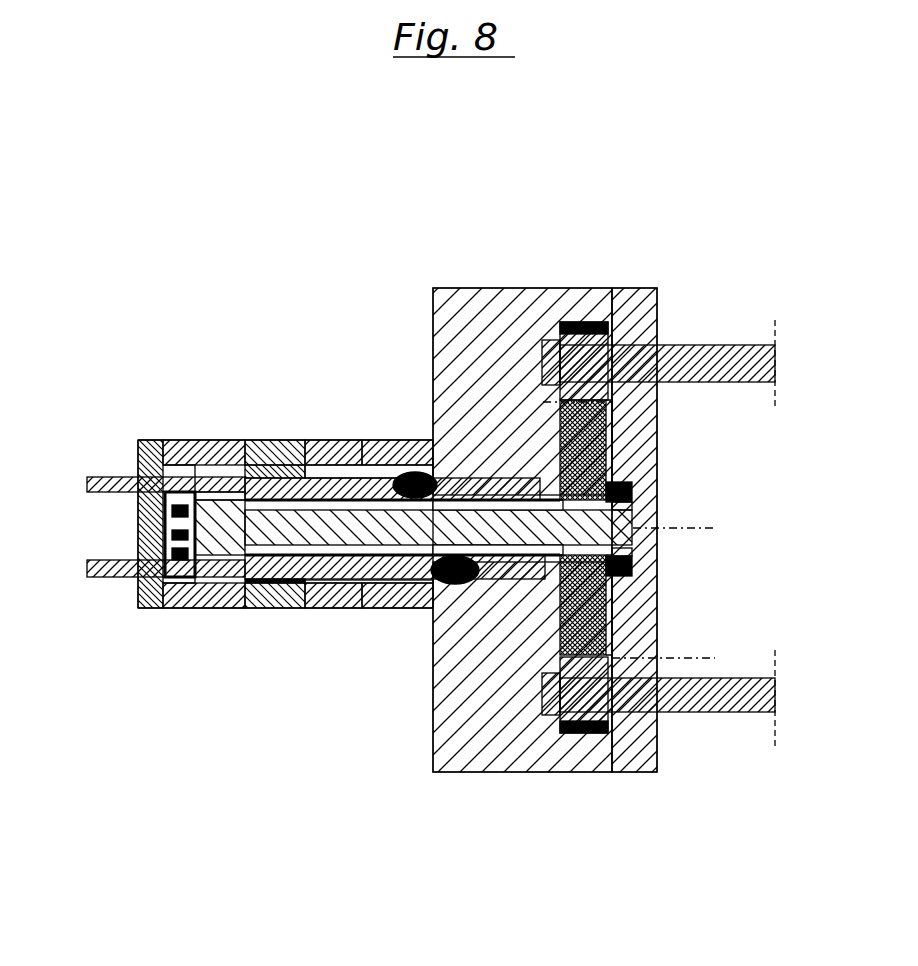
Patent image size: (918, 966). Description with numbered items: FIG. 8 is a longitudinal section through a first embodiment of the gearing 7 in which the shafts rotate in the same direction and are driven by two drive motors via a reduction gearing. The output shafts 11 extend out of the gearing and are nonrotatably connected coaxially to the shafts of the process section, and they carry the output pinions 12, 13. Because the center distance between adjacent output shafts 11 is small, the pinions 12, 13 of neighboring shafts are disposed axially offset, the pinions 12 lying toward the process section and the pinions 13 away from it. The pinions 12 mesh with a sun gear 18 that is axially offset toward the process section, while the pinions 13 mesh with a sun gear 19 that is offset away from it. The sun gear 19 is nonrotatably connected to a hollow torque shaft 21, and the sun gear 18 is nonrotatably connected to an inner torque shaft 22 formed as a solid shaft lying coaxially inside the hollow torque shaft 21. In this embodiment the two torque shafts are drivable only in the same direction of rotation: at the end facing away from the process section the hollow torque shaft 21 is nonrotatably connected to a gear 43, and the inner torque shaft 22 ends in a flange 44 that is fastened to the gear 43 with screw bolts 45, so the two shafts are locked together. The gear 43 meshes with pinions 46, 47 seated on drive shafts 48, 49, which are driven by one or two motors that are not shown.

The gearing 7 is at (142, 243).
The output shafts 11 is at (85, 495).
The output pinions 12 is at (222, 485).
The output pinions 13 is at (335, 580).
The sun gear 18 is at (225, 560).
The sun gear 19 is at (335, 485).
The hollow torque shaft 21 is at (375, 485).
The inner torque shaft 22 is at (388, 582).
The gear 43 is at (612, 425).
The flange 44 is at (640, 548).
The screw bolts 45 is at (612, 490).
The pinion 46 is at (555, 773).
The pinion 47 is at (605, 325).
The drive shaft 48 is at (718, 705).
The drive shaft 49 is at (728, 340).